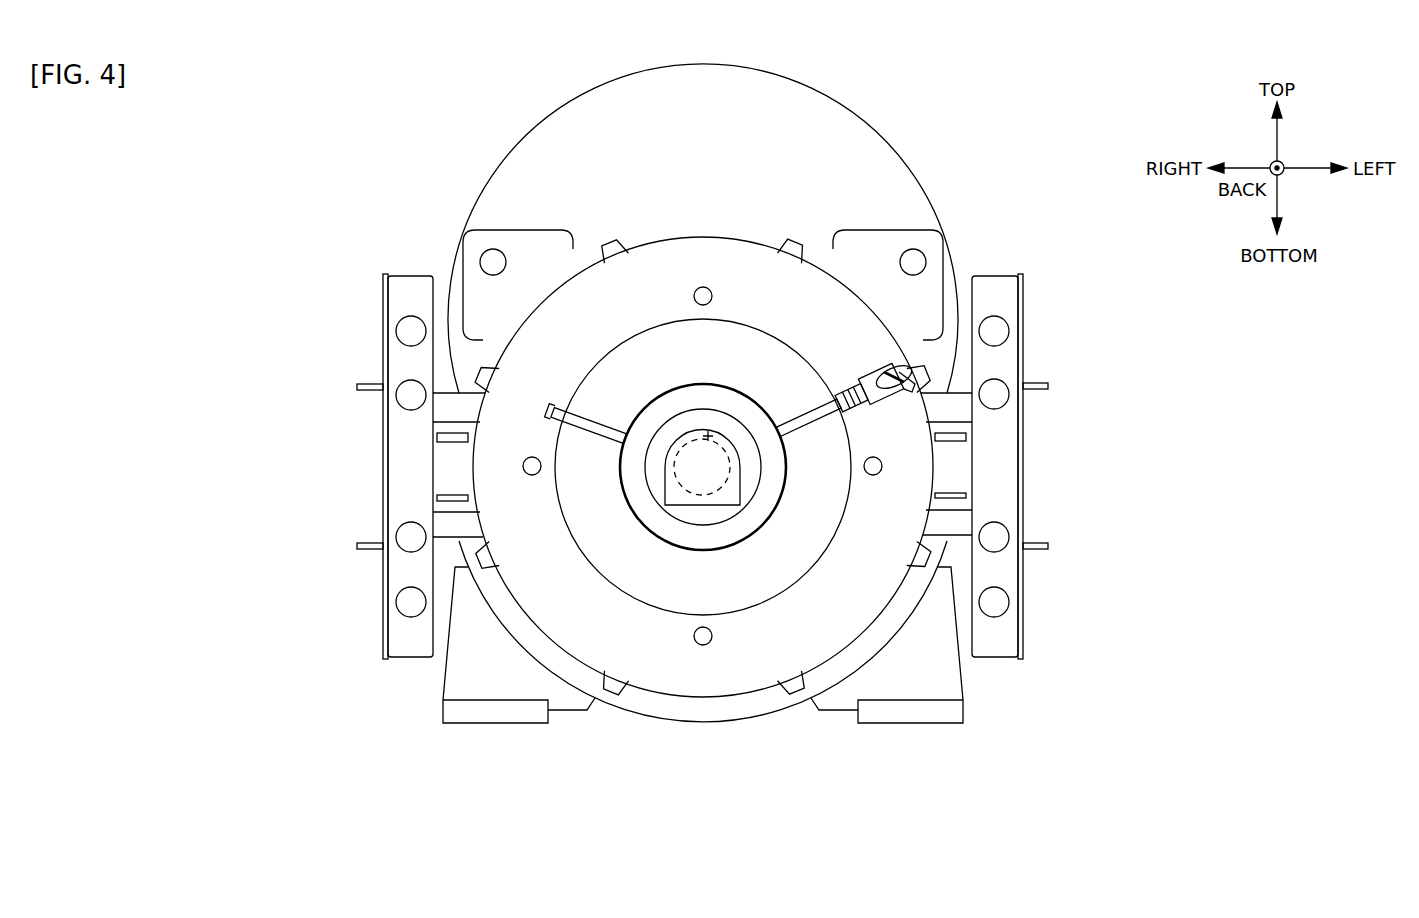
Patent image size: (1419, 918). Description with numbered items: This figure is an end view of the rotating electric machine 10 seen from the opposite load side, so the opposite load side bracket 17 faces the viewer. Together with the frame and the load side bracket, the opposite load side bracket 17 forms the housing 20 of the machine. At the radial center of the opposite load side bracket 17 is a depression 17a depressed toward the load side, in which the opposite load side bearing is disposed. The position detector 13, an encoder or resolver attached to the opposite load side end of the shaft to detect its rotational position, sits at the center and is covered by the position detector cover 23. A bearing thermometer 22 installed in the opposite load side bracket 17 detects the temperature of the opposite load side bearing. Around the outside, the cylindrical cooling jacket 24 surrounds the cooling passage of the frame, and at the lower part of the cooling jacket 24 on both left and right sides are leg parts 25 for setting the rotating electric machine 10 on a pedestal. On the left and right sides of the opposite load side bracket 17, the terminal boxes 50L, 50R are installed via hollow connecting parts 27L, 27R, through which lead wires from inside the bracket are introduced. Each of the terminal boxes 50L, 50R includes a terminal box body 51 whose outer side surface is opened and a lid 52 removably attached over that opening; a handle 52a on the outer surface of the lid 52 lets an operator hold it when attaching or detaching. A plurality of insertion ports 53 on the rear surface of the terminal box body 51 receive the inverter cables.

The rotating electric machine 10 is at (800, 160).
The position detector 13 is at (712, 432).
The opposite load side bracket 17 is at (712, 243).
The depression 17a is at (675, 600).
The housing 20 is at (647, 238).
The bearing thermometer 22 is at (862, 385).
The position detector cover 23 is at (688, 432).
The cooling jacket 24 is at (592, 243).
The leg parts 25 is at (503, 672).
The connecting part 27L is at (955, 525).
The connecting part 27R is at (445, 525).
The terminal box 50L is at (1000, 296).
The terminal box 50R is at (408, 296).
The terminal box body 51 is at (397, 465).
The lid 52 is at (385, 423).
The handle 52a is at (370, 386).
The insertion ports 53 is at (410, 532).